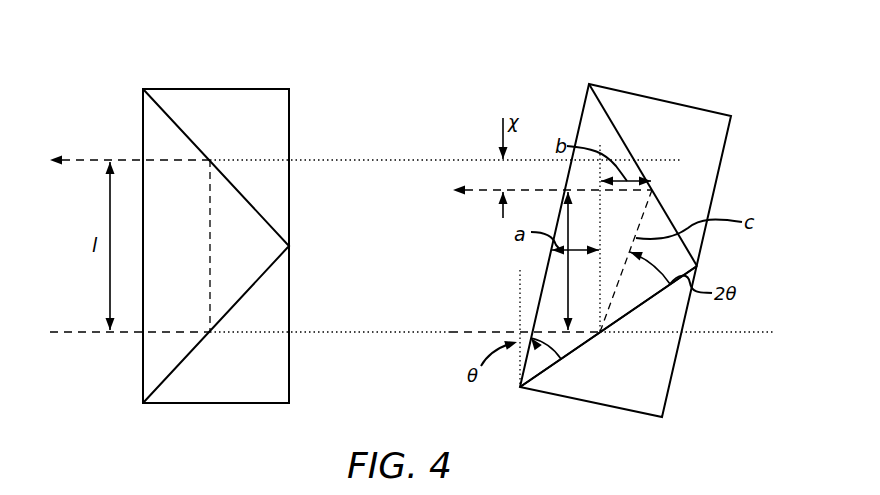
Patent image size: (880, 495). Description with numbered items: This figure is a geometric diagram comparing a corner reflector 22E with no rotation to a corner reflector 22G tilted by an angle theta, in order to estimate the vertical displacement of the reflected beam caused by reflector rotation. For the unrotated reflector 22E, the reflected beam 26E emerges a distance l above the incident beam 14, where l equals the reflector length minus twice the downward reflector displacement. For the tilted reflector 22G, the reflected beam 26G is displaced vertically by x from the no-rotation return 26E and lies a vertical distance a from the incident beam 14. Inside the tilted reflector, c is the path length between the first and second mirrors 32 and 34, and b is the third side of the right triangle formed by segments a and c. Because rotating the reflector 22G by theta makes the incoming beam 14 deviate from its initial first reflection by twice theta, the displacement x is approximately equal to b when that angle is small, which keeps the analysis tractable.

The corner reflector 22E is at (121, 66).
The corner reflector 22G is at (538, 66).
The reflected beam 26E is at (97, 158).
The reflected beam 26G is at (493, 188).
The incident beam 14 is at (68, 333).
The first mirror 32 is at (589, 340).
The second mirror 34 is at (662, 205).